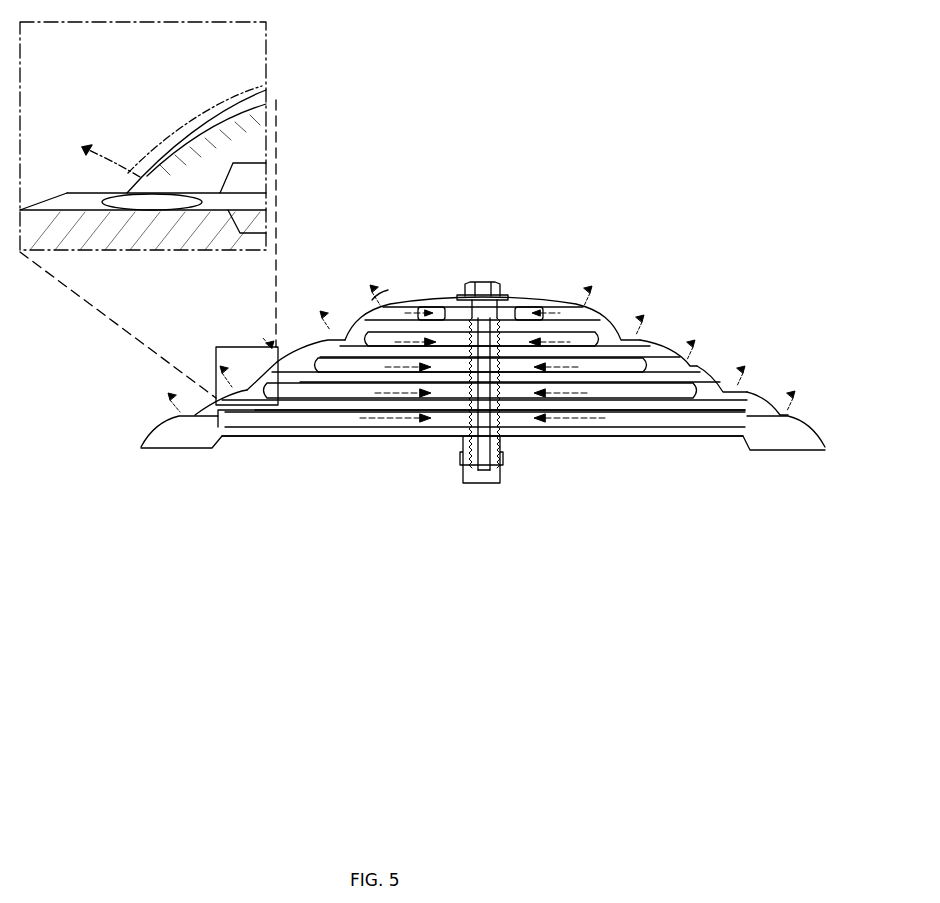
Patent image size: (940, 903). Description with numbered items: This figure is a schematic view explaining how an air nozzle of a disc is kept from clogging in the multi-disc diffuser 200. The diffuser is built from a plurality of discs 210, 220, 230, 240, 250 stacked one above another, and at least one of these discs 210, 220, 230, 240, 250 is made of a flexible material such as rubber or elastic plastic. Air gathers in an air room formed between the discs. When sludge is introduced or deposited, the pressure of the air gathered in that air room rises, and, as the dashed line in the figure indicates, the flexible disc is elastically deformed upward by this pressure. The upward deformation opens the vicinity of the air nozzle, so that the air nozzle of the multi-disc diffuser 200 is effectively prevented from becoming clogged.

The multi-disc diffuser 200 is at (753, 233).
The disc 210 is at (612, 312).
The disc 220 is at (661, 347).
The disc 230 is at (715, 367).
The disc 240 is at (766, 405).
The disc 250 is at (823, 433).